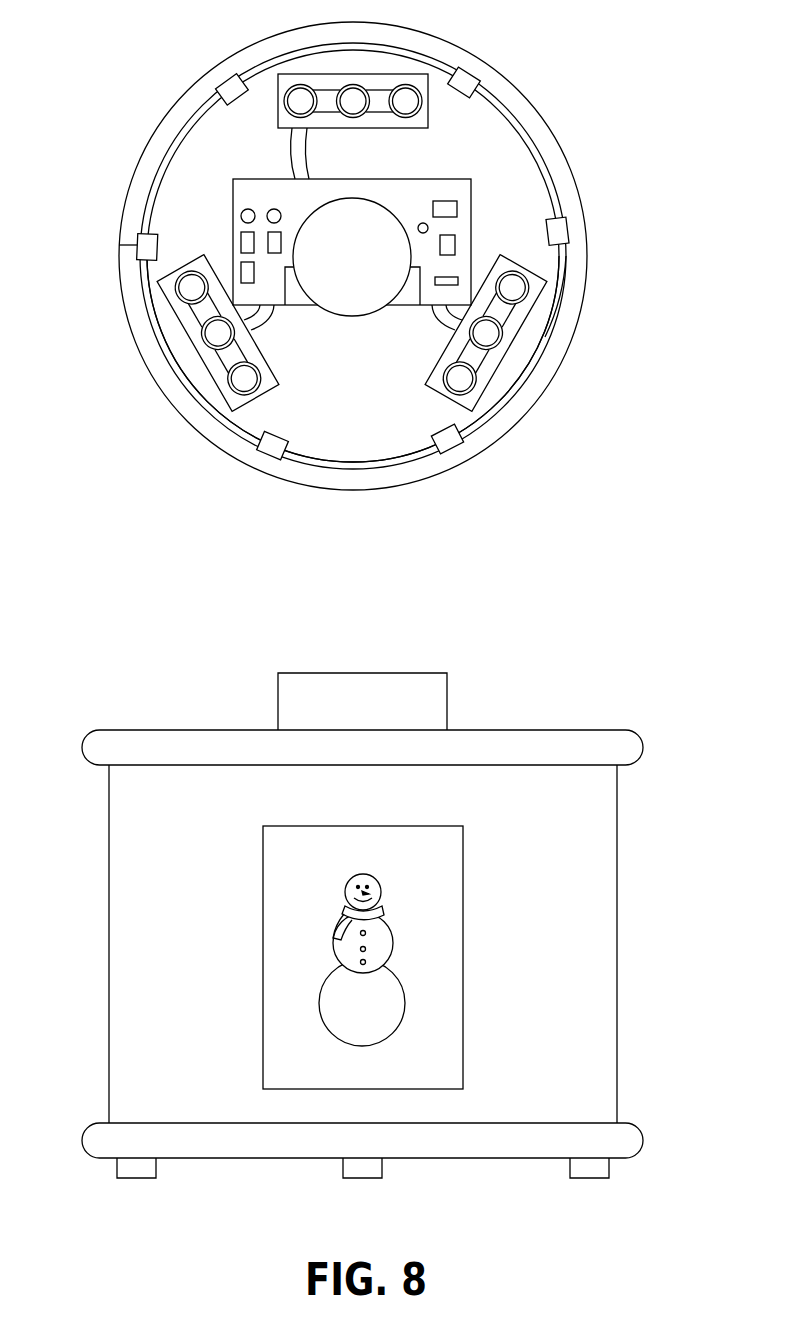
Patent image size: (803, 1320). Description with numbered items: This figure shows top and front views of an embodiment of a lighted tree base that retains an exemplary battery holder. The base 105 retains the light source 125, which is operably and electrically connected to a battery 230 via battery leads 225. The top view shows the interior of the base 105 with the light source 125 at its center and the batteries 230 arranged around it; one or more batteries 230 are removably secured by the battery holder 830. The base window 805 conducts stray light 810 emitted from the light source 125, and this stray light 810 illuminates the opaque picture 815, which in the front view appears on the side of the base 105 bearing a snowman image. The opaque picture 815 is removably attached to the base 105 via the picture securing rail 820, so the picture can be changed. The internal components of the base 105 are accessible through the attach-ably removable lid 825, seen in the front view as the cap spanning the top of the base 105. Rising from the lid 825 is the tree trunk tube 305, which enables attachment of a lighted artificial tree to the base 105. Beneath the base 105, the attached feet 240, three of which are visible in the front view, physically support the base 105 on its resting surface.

The base 105 is at (680, 35).
The base window 805 is at (143, 168).
The opaque picture 815 is at (533, 138).
The picture securing rail 820 is at (470, 428).
The stray light 810 is at (360, 435).
The battery holder 830 is at (515, 337).
The battery 230 is at (467, 180).
The battery leads 225 is at (207, 310).
The light source 125 is at (302, 225).
The attach-ably removable lid 825 is at (553, 729).
The tree trunk tube 305 is at (390, 672).
The feet 240 is at (136, 1178).